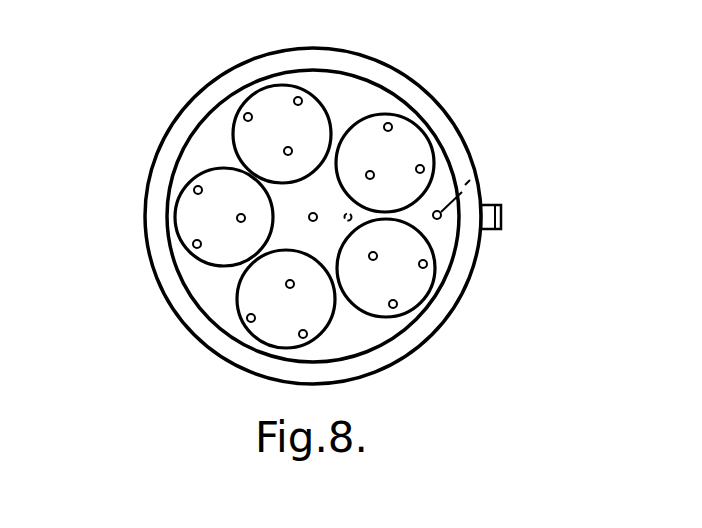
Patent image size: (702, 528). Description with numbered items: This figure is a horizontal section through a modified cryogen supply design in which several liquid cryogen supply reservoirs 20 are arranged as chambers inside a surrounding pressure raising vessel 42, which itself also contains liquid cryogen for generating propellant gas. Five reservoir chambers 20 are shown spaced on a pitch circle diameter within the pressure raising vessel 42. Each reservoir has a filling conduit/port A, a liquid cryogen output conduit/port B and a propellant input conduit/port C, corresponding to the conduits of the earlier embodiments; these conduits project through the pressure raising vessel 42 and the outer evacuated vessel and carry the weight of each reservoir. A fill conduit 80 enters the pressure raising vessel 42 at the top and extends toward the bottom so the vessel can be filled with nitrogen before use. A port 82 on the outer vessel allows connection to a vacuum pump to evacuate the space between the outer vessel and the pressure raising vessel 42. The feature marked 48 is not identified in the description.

The liquid cryogen supply reservoir 20 is at (250, 98).
The pressure raising vessel 42 is at (390, 93).
The reference line 48 is at (476, 174).
The fill conduit 80 is at (306, 218).
The port 82 is at (503, 217).
The filling conduit/port A is at (192, 250).
The liquid cryogen output conduit/port B is at (193, 189).
The propellant input conduit/port C is at (238, 214).